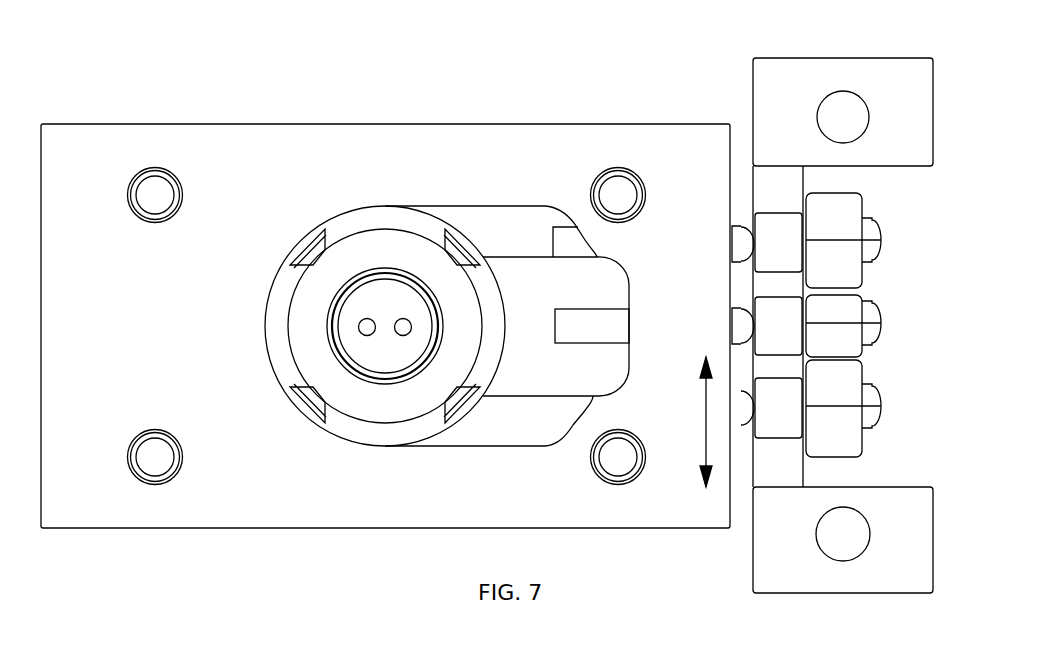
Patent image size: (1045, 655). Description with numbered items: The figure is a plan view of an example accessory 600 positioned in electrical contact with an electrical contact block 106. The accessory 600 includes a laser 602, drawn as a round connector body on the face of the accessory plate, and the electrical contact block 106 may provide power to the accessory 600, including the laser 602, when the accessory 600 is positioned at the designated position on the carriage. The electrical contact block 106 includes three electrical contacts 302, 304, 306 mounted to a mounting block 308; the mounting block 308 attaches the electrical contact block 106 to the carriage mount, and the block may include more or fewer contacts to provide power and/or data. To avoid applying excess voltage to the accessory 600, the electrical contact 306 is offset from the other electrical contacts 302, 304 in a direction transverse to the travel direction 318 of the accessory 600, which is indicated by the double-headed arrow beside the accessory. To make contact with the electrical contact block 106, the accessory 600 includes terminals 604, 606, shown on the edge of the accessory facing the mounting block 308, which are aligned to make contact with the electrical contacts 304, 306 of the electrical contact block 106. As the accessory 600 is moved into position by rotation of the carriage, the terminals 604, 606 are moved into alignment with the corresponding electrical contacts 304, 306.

The electrical contact block 106 is at (809, 297).
The electrical contact 302 is at (883, 388).
The electrical contact 304 is at (880, 232).
The electrical contact 306 is at (883, 302).
The mounting block 308 is at (753, 60).
The travel direction 318 is at (706, 415).
The accessory 600 is at (96, 90).
The laser 602 is at (305, 222).
The terminal 604 is at (732, 320).
The terminal 606 is at (732, 232).